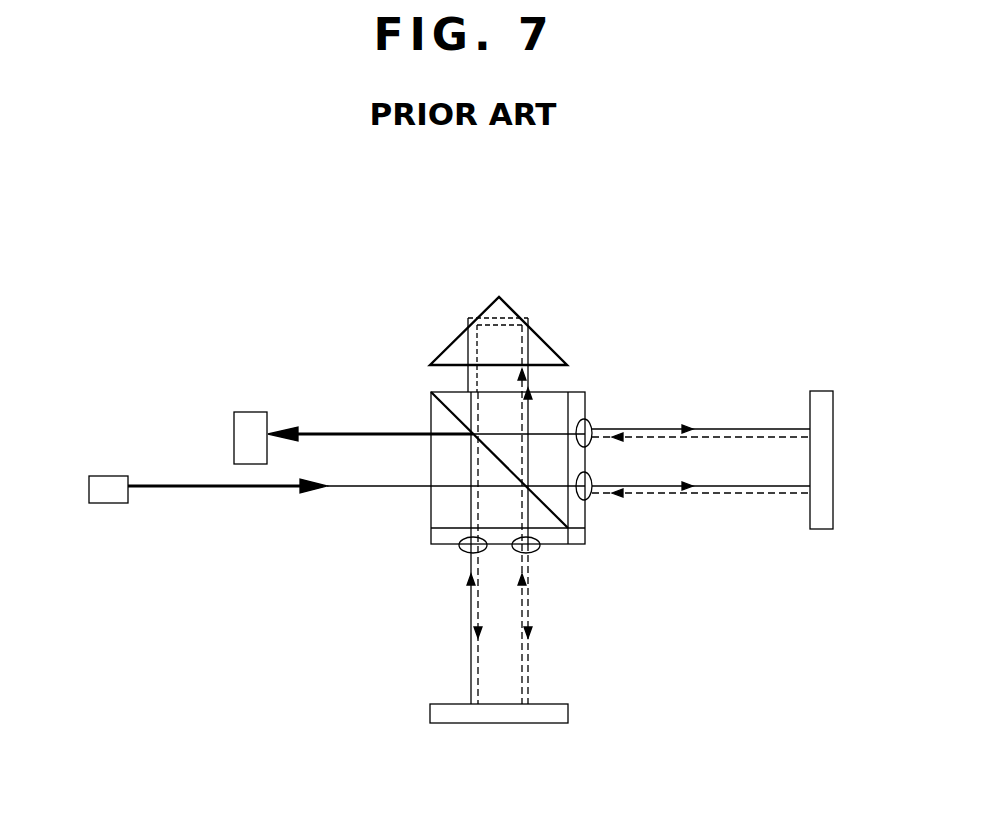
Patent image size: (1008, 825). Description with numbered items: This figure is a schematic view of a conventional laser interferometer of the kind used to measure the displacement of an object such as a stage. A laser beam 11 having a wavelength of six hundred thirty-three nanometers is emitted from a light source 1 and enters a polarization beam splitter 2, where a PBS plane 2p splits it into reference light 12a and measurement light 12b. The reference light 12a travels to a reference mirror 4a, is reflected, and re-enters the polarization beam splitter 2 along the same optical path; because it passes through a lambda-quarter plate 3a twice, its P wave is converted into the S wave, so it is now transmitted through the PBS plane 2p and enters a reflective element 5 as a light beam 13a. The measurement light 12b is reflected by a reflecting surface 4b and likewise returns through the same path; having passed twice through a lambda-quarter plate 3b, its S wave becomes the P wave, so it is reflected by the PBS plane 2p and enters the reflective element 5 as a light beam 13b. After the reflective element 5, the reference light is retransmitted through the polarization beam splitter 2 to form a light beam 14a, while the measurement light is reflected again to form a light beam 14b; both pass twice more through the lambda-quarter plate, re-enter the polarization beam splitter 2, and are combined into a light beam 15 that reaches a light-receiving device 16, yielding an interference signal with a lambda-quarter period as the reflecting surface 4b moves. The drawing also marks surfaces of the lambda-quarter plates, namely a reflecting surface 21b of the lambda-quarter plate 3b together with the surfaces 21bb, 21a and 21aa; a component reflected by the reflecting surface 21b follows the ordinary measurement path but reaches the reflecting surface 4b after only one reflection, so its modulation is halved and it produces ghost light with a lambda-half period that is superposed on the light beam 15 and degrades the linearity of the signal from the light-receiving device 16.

The light source 1 is at (111, 490).
The laser beam 11 is at (207, 490).
The light beam 15 is at (345, 432).
The light-receiving device 16 is at (247, 435).
The polarization beam splitter 2 is at (430, 392).
The PBS plane 2p is at (452, 390).
The lambda/4 plate 3a is at (567, 547).
The lambda/4 plate 3b is at (587, 528).
The reflective element 5 is at (506, 304).
The light beam 13a is at (527, 363).
The light beam 13b is at (525, 328).
The light beam 14a is at (470, 615).
The light beam 14b is at (722, 432).
The reference light 12a is at (528, 663).
The measurement light 12b is at (712, 487).
The quarter wave plate 21a is at (540, 552).
The quarter wave plate 21aa is at (462, 548).
The reflecting surface 21b is at (594, 496).
The quarter wave plate 21bb is at (592, 428).
The reference mirror 4a is at (430, 710).
The reflecting surface 4b is at (822, 400).